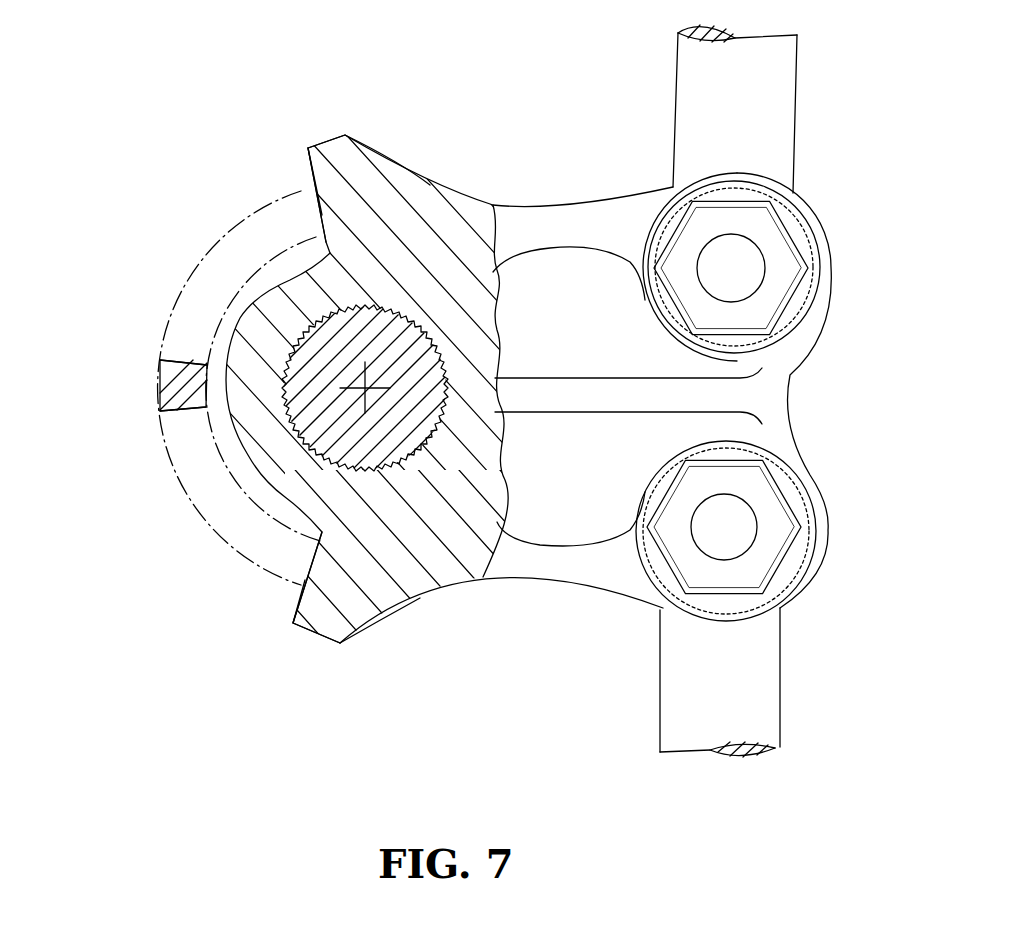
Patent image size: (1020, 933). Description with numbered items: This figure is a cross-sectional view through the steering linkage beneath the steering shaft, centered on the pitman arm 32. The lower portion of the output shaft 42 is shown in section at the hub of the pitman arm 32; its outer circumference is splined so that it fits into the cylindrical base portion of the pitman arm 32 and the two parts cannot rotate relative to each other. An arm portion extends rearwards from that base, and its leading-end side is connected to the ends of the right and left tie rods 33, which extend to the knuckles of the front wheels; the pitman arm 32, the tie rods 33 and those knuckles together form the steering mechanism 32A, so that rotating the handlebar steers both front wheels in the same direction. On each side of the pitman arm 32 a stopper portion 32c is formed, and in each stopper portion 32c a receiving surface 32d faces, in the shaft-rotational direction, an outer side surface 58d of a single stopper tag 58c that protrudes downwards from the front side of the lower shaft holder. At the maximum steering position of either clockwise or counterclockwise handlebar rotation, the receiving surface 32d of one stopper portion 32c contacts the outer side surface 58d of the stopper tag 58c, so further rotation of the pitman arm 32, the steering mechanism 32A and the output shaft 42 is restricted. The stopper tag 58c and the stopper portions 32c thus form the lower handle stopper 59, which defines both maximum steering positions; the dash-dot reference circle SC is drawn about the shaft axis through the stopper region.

The pitman arm 32 is at (515, 466).
The steering mechanism 32A is at (571, 198).
The stopper portion 32c is at (343, 155).
The receiving surface 32d is at (313, 185).
The tie rod 33 is at (778, 122).
The output shaft 42 is at (302, 346).
The spline circle SC is at (335, 382).
The stopper tag 58c is at (157, 387).
The outer side surface 58d is at (167, 360).
The lower handle stopper 59 is at (140, 566).